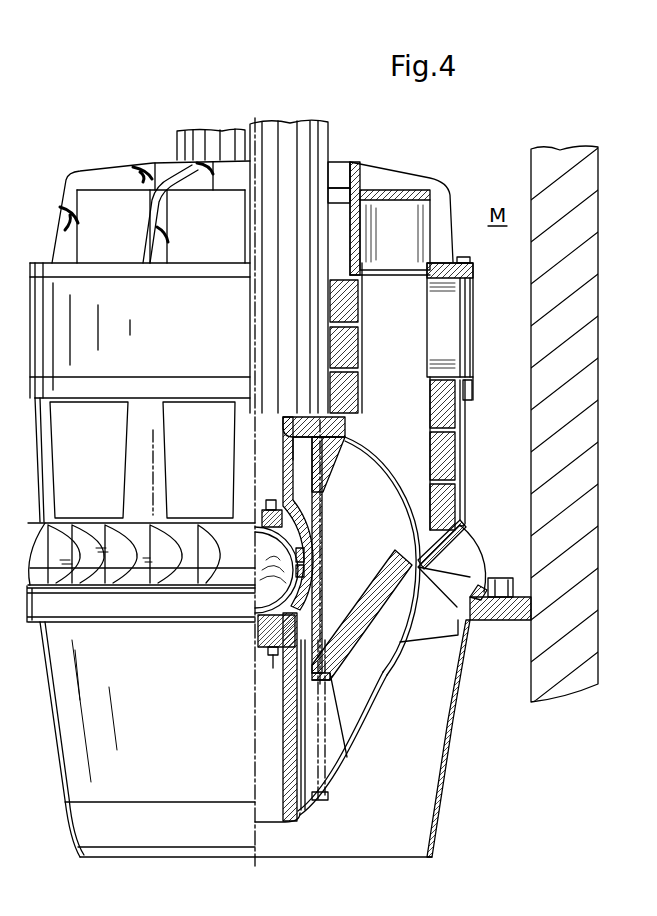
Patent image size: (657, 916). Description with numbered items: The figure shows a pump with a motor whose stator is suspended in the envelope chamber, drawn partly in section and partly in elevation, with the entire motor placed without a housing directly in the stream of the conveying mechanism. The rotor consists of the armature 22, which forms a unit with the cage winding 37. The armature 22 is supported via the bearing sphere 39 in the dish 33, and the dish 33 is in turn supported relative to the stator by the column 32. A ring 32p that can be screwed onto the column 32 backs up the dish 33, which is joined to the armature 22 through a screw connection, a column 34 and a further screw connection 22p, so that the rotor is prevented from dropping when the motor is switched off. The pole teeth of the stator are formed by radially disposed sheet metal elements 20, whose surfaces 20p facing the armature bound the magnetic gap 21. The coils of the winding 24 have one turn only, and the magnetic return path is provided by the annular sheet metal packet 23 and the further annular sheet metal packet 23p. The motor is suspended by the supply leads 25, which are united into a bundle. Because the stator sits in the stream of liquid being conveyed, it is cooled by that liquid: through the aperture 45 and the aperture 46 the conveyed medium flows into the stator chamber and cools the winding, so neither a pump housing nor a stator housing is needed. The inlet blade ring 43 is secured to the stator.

The sheet metal elements 20 is at (415, 310).
The surfaces facing the armature 20p is at (426, 437).
The magnetic gap 21 is at (385, 492).
The armature 22 is at (368, 551).
The further screw connection 22p is at (318, 767).
The annular sheet metal packet 23 is at (420, 217).
The annular sheet metal packet 23p is at (447, 336).
The winding 24 is at (433, 396).
The supply leads 25 is at (300, 333).
The column 32 is at (280, 456).
The ring 32p is at (307, 554).
The dish 33 is at (272, 523).
The column 34 is at (289, 767).
The cage winding 37 is at (355, 447).
The bearing sphere 39 is at (253, 532).
The inlet blade ring 43 is at (468, 549).
The aperture 45 is at (70, 213).
The aperture 46 is at (66, 456).